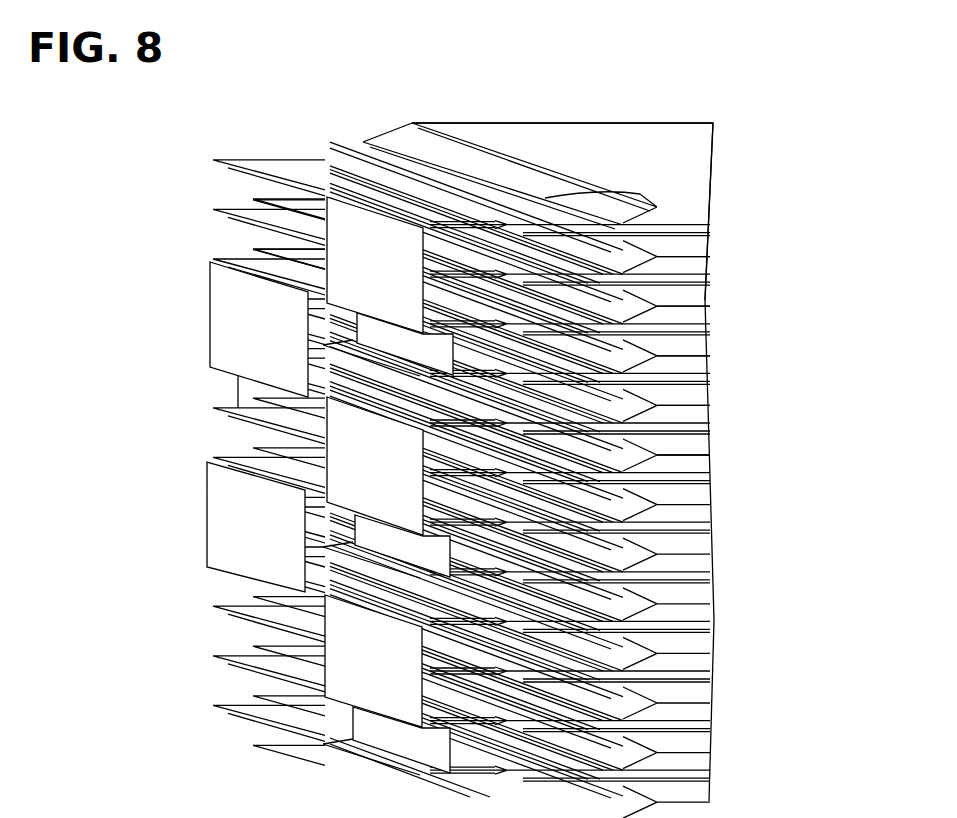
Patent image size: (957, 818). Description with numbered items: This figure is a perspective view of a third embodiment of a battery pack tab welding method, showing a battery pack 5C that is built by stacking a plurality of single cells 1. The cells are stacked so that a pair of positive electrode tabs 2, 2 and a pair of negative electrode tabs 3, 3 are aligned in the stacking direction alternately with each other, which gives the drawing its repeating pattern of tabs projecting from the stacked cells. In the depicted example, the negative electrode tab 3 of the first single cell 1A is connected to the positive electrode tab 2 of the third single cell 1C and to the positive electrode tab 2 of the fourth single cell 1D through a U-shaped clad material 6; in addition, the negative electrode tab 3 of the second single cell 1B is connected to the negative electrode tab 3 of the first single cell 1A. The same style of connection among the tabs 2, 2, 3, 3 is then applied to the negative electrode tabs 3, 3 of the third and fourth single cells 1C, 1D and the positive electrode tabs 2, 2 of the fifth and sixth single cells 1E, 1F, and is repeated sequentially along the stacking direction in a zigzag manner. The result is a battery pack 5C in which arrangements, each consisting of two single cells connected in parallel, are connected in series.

The battery pack 5C is at (206, 138).
The single cell 1 is at (580, 446).
The first single cell 1A is at (553, 150).
The second single cell 1B is at (700, 263).
The third single cell 1C is at (697, 320).
The fourth single cell 1D is at (693, 368).
The fifth single cell 1E is at (698, 415).
The sixth single cell 1F is at (698, 467).
The positive electrode tab 2 is at (283, 160).
The negative electrode tab 3 is at (273, 251).
The U-shaped clad material 6 is at (240, 384).